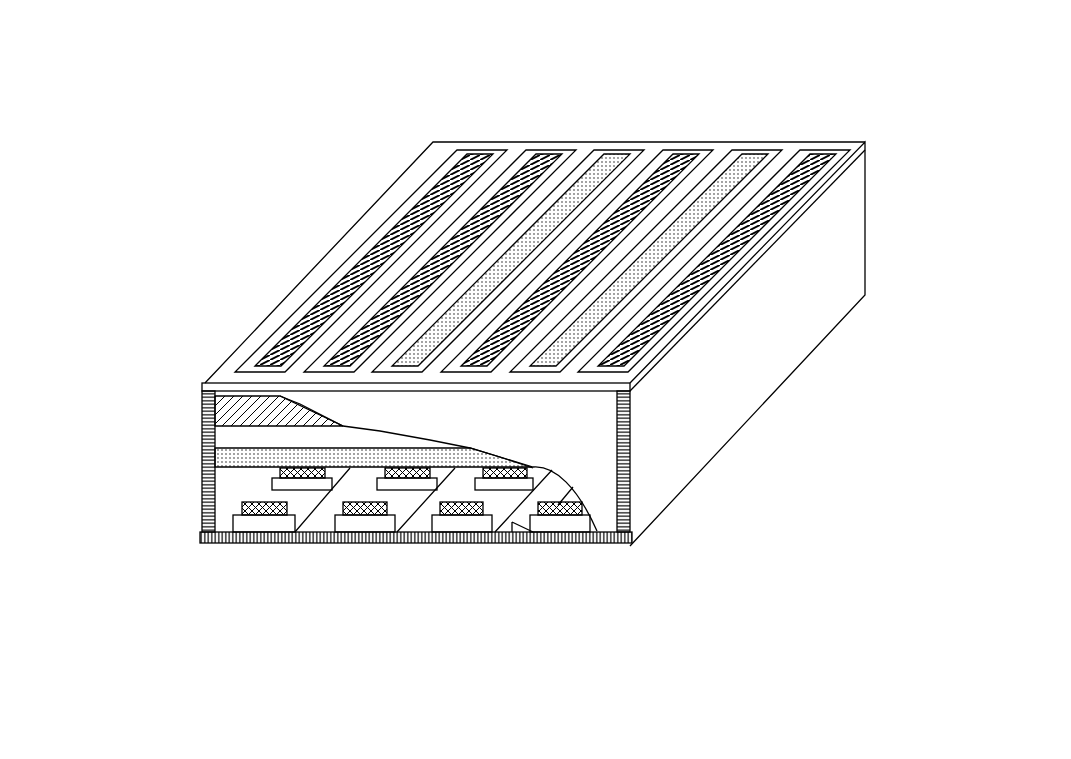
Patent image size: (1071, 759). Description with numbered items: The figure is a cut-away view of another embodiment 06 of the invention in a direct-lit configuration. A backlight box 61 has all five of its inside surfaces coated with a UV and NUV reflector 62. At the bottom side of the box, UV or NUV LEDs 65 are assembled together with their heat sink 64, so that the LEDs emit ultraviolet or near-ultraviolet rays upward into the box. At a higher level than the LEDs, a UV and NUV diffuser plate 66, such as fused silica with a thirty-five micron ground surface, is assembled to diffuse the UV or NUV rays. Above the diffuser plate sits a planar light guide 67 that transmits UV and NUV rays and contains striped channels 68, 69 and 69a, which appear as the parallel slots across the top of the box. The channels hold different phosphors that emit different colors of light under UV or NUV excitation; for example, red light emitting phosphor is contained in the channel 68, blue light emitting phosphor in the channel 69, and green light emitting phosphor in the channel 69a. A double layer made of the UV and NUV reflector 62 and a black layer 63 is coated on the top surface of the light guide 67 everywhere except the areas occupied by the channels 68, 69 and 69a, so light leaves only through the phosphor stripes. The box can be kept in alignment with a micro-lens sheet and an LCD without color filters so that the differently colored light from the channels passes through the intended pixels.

The direct-lit backlight embodiment 06 is at (737, 15).
The backlight box 61 is at (693, 393).
The UV and NUV reflector 62 is at (202, 385).
The black layer 63 is at (227, 380).
The heat sink 64 is at (265, 527).
The UV or NUV LEDs 65 is at (458, 513).
The UV and NUV diffuser plate 66 is at (240, 457).
The planar light guide 67 is at (250, 412).
The striped channel 68 is at (542, 213).
The striped channel 69 is at (533, 150).
The striped channel 69a is at (600, 150).